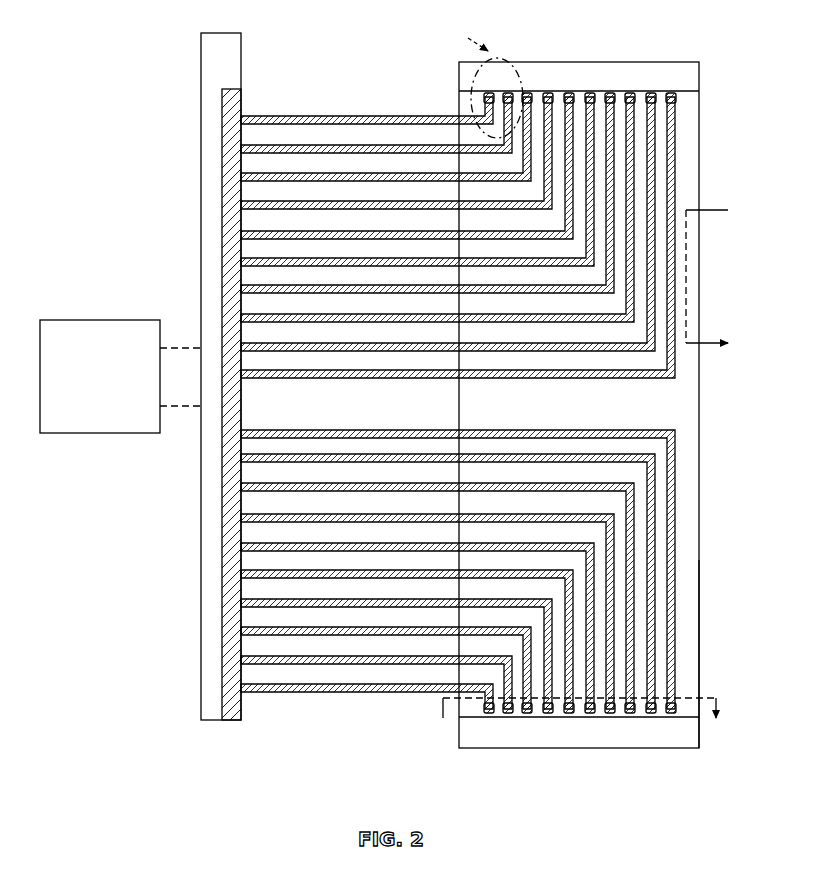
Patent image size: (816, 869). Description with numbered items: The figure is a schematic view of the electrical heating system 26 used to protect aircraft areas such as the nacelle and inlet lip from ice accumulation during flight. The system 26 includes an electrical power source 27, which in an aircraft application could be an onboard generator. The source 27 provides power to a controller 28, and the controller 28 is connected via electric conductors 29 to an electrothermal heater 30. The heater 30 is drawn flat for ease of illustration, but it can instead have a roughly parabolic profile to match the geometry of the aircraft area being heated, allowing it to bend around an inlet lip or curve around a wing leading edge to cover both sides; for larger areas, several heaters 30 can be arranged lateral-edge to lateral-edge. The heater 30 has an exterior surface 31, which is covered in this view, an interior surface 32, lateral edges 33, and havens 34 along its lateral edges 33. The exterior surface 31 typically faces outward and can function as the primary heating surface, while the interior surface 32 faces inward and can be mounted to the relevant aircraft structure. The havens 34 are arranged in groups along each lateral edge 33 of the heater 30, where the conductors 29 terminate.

The electrical heating system 26 is at (140, 156).
The electrical power source 27 is at (80, 320).
The controller 28 is at (221, 33).
The electric conductors 29 is at (380, 150).
The electrothermal heater 30 is at (680, 143).
The exterior surface 31 is at (692, 620).
The interior surface 32 is at (688, 664).
The lateral edges 33 is at (699, 63).
The havens 34 is at (569, 93).